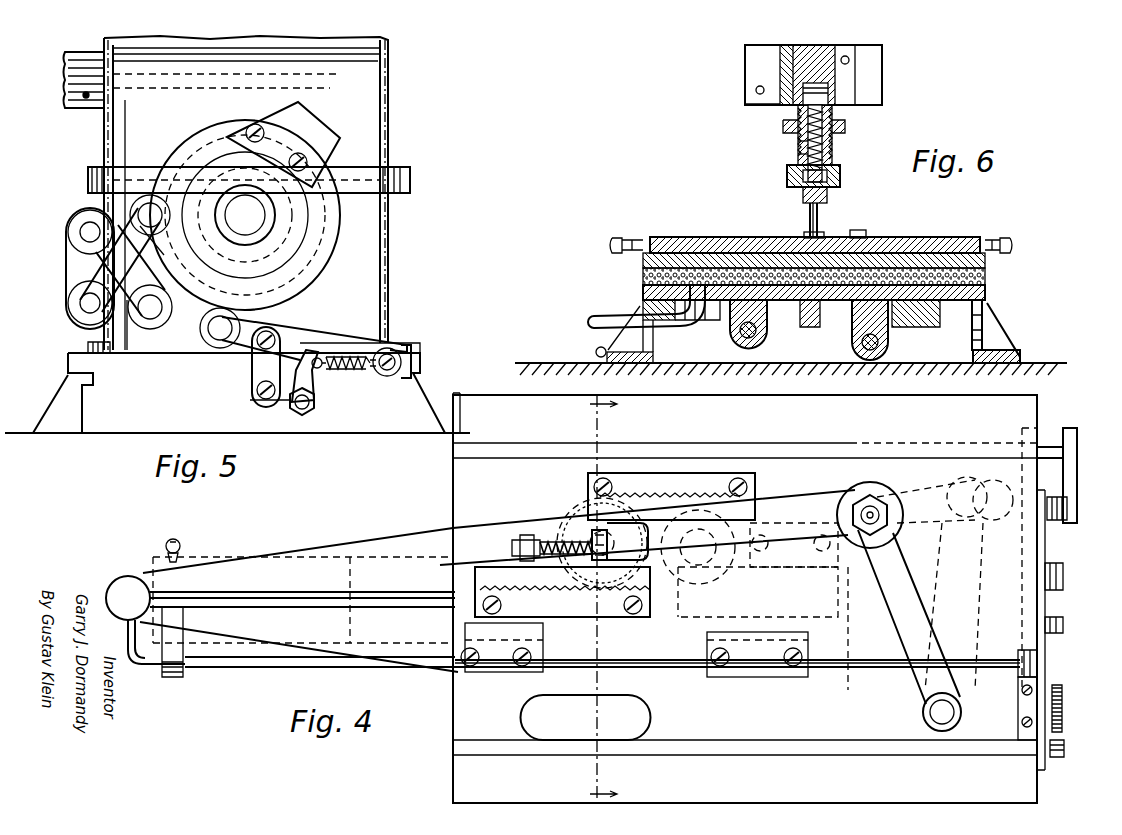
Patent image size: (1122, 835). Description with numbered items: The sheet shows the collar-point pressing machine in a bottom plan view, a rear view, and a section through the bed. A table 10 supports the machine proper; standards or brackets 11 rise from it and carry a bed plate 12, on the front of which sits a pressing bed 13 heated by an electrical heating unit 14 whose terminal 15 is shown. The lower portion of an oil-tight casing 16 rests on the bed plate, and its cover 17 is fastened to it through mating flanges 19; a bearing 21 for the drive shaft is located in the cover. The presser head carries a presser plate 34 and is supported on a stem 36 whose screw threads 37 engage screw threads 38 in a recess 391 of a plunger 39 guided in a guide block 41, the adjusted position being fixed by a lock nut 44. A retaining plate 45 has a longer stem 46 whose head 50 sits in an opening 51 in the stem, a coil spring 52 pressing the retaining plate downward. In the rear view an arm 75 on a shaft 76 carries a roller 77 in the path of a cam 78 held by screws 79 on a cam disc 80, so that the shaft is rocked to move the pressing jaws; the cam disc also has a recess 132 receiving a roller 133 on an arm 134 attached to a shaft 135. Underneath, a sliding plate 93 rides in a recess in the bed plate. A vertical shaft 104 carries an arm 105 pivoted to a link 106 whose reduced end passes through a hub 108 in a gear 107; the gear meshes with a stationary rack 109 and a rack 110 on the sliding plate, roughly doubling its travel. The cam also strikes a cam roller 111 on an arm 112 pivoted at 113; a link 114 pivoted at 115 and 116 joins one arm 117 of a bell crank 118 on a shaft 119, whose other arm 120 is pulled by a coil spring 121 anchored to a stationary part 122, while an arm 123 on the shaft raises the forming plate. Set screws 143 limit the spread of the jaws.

In FIG. 6, the table 10 is at (1040, 362).
In FIG. 5, the standards or brackets 11 is at (72, 384).
In FIG. 6, the standards or brackets 11 is at (972, 350).
In FIG. 6, the bed plate 12 is at (985, 292).
In FIG. 4, the bed plate 12 is at (1042, 540).
In FIG. 6, the pressing bed 13 is at (652, 276).
In FIG. 6, the electrical heating unit 14 is at (988, 272).
In FIG. 6, the terminal 15 is at (602, 320).
In FIG. 5, the oil-tight casing 16 is at (380, 212).
In FIG. 5, the cover 17 is at (378, 156).
In FIG. 5, the flanges 19 is at (404, 180).
In FIG. 5, the bearing 21 is at (86, 96).
In FIG. 6, the presser plate 34 is at (840, 180).
In FIG. 6, the stem 36 is at (802, 154).
In FIG. 6, the screw threads 37 is at (830, 142).
In FIG. 6, the screw threads 38 is at (846, 112).
In FIG. 6, the plunger 39 is at (760, 62).
In FIG. 6, the recess 391 is at (776, 104).
In FIG. 6, the guide block 41 is at (768, 76).
In FIG. 6, the lock nut 44 is at (786, 128).
In FIG. 6, the retaining plate 45 is at (822, 234).
In FIG. 6, the stem 46 is at (810, 213).
In FIG. 6, the head 50 is at (790, 171).
In FIG. 6, the opening 51 is at (802, 108).
In FIG. 6, the coil spring 52 is at (800, 141).
In FIG. 5, the arm 75 is at (112, 272).
In FIG. 5, the shaft 76 is at (80, 233).
In FIG. 5, the roller 77 is at (146, 320).
In FIG. 5, the cam 78 is at (338, 138).
In FIG. 5, the screws 79 is at (265, 133).
In FIG. 5, the cam disc 80 is at (335, 236).
In FIG. 6, the sliding plate 93 is at (840, 168).
In FIG. 4, the sliding plate 93 is at (664, 647).
In FIG. 4, the shaft 104 is at (950, 713).
In FIG. 4, the arm 105 is at (940, 616).
In FIG. 4, the link 106 is at (835, 508).
In FIG. 4, the gear 107 is at (575, 525).
In FIG. 6, the hub 108 is at (853, 332).
In FIG. 4, the hub 108 is at (584, 535).
In FIG. 4, the stationary rack 109 is at (640, 496).
In FIG. 4, the rack 110 is at (562, 596).
In FIG. 5, the cam roller 111 is at (208, 328).
In FIG. 4, the cam roller 111 is at (1058, 578).
In FIG. 5, the arm 112 is at (314, 338).
In FIG. 5, the pivot 113 is at (408, 356).
In FIG. 4, the pivot 113 is at (1062, 743).
In FIG. 5, the link 114 is at (254, 372).
In FIG. 5, the pivot 115 is at (270, 330).
In FIG. 5, the pivot 116 is at (256, 395).
In FIG. 5, the arm 117 is at (290, 410).
In FIG. 4, the arm 117 is at (1054, 648).
In FIG. 5, the bell crank 118 is at (314, 408).
In FIG. 5, the shaft 119 is at (318, 400).
In FIG. 4, the shaft 119 is at (862, 662).
In FIG. 5, the arm 120 is at (318, 368).
In FIG. 5, the coil spring 121 is at (392, 352).
In FIG. 4, the coil spring 121 is at (1062, 702).
In FIG. 5, the stationary part 122 is at (404, 362).
In FIG. 4, the arm 123 is at (140, 582).
In FIG. 5, the recess 132 is at (160, 212).
In FIG. 5, the roller 133 is at (162, 218).
In FIG. 5, the arm 134 is at (148, 237).
In FIG. 5, the shaft 135 is at (82, 305).
In FIG. 4, the shaft 135 is at (1045, 444).
In FIG. 6, the set screws 143 is at (612, 243).